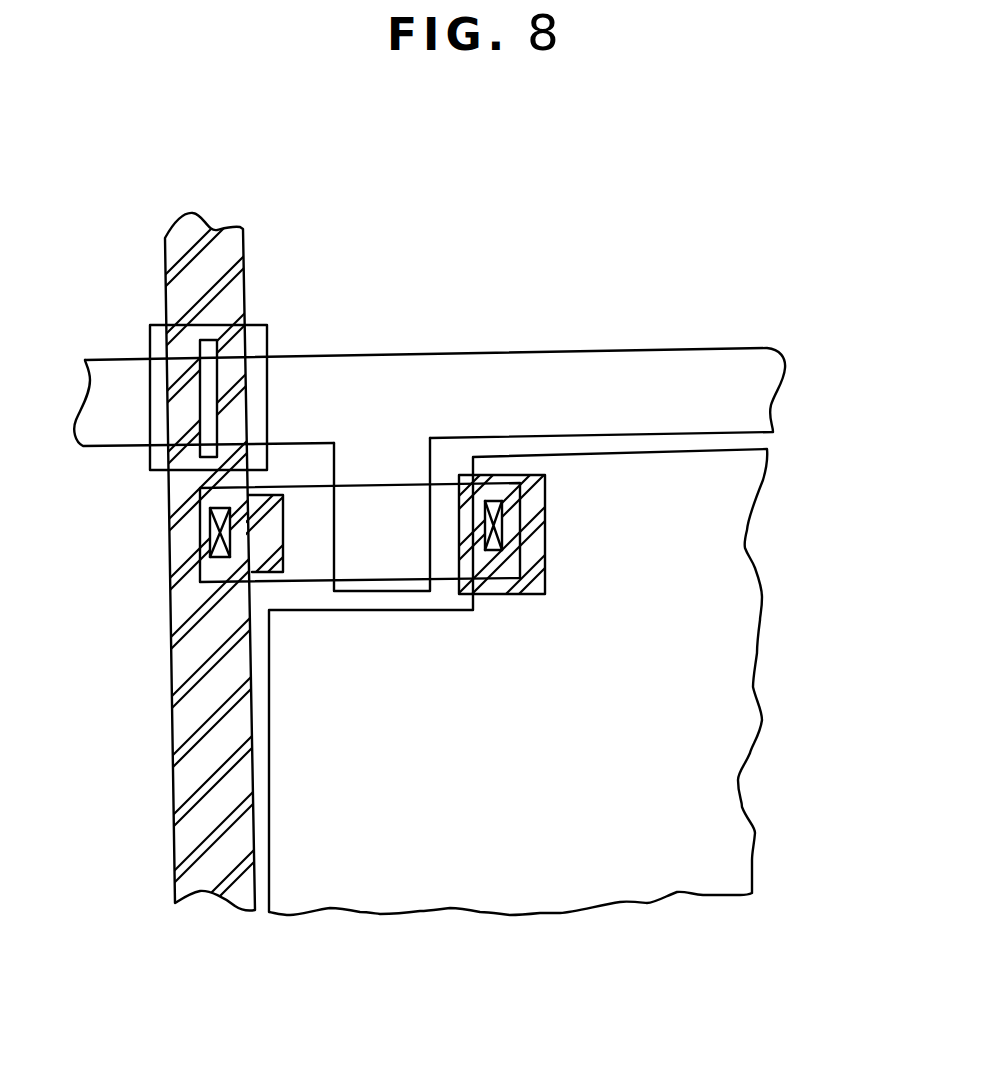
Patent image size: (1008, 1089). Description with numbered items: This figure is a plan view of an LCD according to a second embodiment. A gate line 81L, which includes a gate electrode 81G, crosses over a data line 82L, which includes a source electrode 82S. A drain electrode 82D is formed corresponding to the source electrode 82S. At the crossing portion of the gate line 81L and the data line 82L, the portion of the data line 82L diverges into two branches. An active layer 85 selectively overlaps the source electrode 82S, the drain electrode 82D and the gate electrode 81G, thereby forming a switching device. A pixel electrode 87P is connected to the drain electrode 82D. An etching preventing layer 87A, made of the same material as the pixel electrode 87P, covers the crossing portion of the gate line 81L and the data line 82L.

The gate line 81L is at (763, 388).
The gate electrode 81G is at (408, 590).
The data line 82L is at (216, 243).
The source electrode 82S is at (293, 588).
The drain electrode 82D is at (545, 585).
The active layer 85 is at (318, 590).
The pixel electrode 87P is at (752, 560).
The etching preventing layer 87A is at (150, 332).